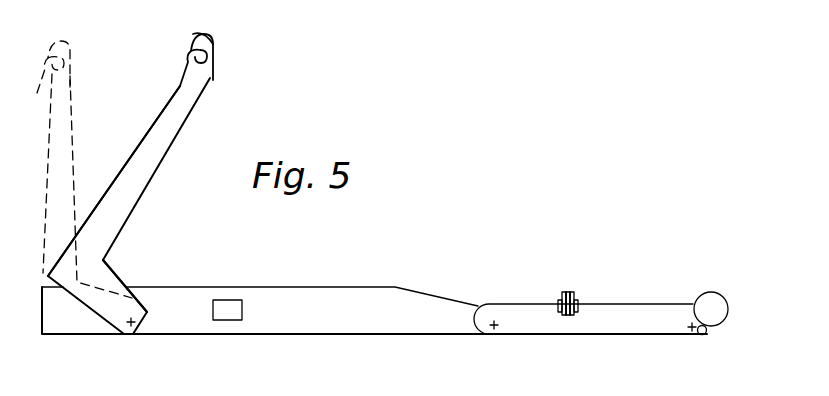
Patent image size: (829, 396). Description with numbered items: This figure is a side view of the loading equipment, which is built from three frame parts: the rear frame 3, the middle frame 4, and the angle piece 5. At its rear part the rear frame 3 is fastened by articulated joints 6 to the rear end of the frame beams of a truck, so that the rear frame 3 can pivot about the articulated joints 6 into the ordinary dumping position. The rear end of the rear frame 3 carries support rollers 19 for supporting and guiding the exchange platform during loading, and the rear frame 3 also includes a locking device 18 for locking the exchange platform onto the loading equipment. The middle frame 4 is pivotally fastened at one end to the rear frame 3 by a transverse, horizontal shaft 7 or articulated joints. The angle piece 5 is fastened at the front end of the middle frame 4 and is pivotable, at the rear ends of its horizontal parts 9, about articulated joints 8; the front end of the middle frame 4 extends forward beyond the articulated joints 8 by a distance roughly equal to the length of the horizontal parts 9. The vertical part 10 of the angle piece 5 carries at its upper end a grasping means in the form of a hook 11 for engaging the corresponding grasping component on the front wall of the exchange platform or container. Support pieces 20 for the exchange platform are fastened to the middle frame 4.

The rear frame 3 is at (630, 317).
The middle frame 4 is at (268, 298).
The angle piece 5 is at (157, 167).
The articulated joints 6 is at (707, 334).
The transverse horizontal shaft 7 is at (493, 327).
The articulated joints 8 is at (128, 327).
The horizontal parts 9 is at (105, 283).
The vertical part 10 is at (160, 124).
The hook 11 is at (212, 52).
The locking device 18 is at (569, 284).
The support rollers 19 is at (714, 307).
The support pieces 20 is at (230, 312).